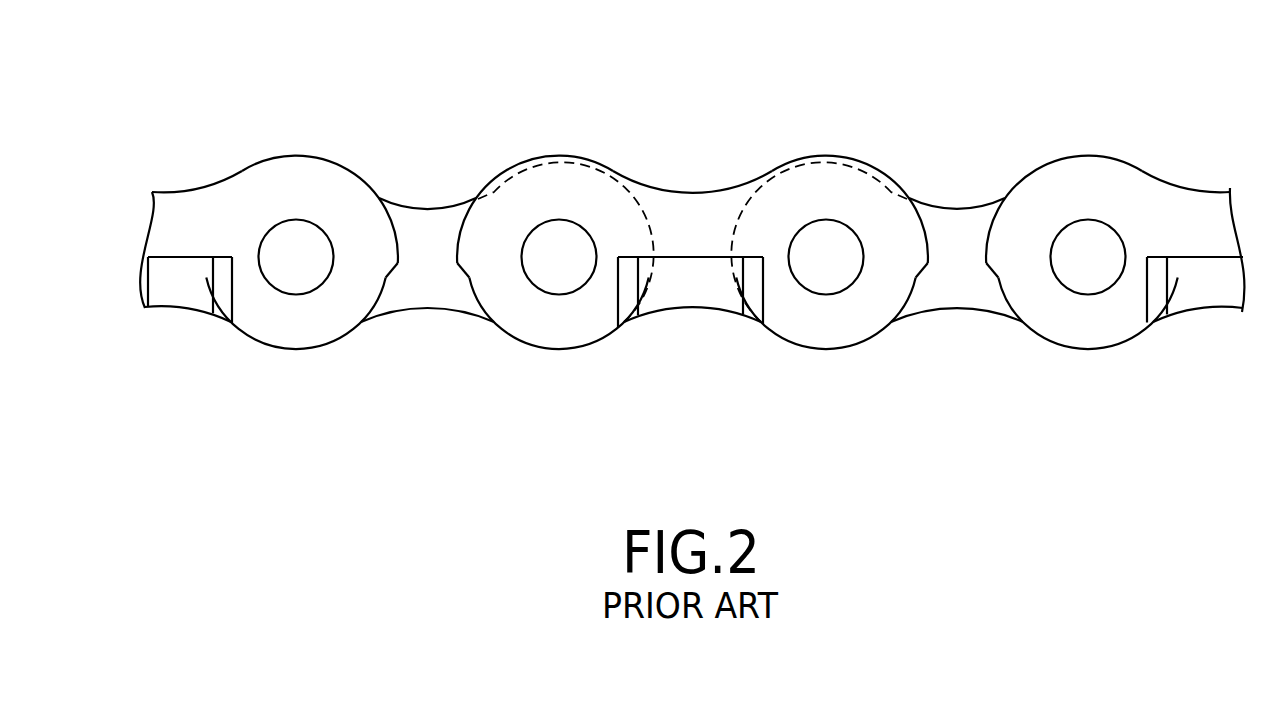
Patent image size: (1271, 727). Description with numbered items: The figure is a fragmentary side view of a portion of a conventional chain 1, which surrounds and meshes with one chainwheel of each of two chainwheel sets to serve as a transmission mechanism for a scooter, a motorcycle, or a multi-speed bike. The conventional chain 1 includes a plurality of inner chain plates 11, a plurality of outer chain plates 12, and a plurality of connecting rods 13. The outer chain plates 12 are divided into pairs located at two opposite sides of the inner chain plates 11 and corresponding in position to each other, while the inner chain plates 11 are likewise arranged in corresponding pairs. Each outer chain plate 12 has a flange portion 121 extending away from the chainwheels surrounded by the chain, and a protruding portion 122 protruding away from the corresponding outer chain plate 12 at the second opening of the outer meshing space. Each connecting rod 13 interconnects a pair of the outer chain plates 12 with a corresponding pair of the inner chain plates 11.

The conventional chain 1 is at (1042, 80).
The inner chain plate 11 is at (425, 218).
The outer chain plate 12 is at (175, 205).
The flange portion 121 is at (560, 166).
The protruding portion 122 is at (693, 290).
The connecting rod 13 is at (297, 275).